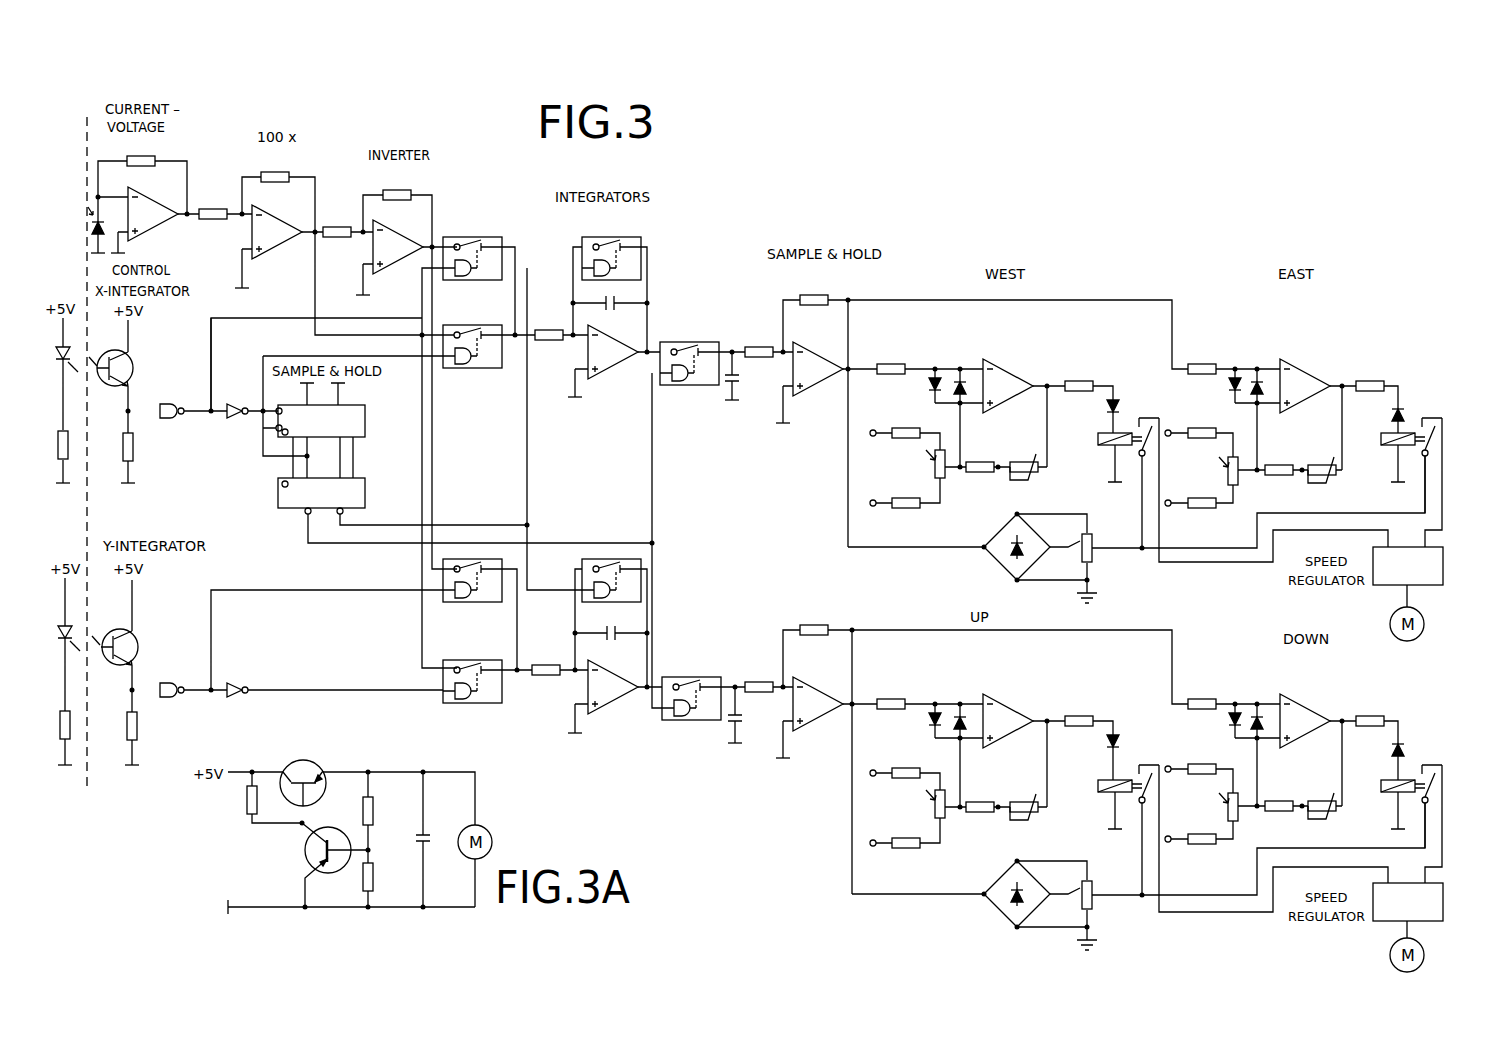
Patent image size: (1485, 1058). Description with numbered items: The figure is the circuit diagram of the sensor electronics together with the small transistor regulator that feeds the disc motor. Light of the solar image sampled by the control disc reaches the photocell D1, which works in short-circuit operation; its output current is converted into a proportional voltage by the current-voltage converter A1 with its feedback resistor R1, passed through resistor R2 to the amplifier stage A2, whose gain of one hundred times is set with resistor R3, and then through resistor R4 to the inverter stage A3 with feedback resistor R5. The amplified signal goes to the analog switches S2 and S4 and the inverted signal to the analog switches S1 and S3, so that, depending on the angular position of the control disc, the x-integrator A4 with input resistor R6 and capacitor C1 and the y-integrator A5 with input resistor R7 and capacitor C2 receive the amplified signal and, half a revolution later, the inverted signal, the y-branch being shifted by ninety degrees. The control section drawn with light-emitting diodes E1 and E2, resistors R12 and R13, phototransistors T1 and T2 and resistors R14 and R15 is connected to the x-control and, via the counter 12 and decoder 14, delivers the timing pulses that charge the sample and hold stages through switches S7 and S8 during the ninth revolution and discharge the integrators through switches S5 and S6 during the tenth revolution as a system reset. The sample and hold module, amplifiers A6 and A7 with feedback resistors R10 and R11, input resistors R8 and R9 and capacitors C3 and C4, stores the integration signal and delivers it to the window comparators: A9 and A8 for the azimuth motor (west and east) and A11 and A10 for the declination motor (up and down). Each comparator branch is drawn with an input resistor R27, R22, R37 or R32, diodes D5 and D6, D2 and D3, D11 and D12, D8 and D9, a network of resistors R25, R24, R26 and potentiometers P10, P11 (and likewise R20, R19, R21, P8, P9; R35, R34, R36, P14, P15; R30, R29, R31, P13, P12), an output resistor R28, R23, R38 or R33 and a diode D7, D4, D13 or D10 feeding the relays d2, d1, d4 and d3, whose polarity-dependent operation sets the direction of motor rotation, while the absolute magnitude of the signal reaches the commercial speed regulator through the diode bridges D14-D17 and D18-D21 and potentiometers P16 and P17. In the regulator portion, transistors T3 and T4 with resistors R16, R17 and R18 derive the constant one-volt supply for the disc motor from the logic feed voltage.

In FIG. 3, the feedback resistor of current-voltage converter R1 is at (141, 151).
In FIG. 3, the current-voltage converter A1 is at (153, 214).
In FIG. 3, the photocell D1 is at (107, 225).
In FIG. 3, the resistor R2 is at (213, 205).
In FIG. 3, the amplifier stage A2 is at (277, 232).
In FIG. 3, the feedback resistor R3 is at (275, 168).
In FIG. 3, the resistor R4 is at (337, 223).
In FIG. 3, the inverter stage A3 is at (398, 247).
In FIG. 3, the feedback resistor R5 is at (397, 186).
In FIG. 3, the light emitting diode E1 is at (71, 348).
In FIG. 3, the resistor R12 is at (74, 442).
In FIG. 3, the phototransistor T1 is at (125, 363).
In FIG. 3, the resistor R14 is at (146, 447).
In FIG. 3, the light emitting diode E2 is at (73, 626).
In FIG. 3, the resistor R13 is at (75, 722).
In FIG. 3, the phototransistor T2 is at (130, 645).
In FIG. 3, the resistor R15 is at (150, 726).
In FIG. 3, the counter 12 is at (363, 421).
In FIG. 3, the decoder 14 is at (363, 494).
In FIG. 3, the analog switch S1 is at (472, 249).
In FIG. 3, the analog switch S2 is at (472, 337).
In FIG. 3, the analog switch S3 is at (472, 595).
In FIG. 3, the analog switch S4 is at (472, 672).
In FIG. 3, the switch S5 is at (611, 249).
In FIG. 3, the switch S6 is at (603, 575).
In FIG. 3, the switch S7 is at (689, 351).
In FIG. 3, the switch S8 is at (691, 686).
In FIG. 3, the integrator resistor R6 is at (549, 325).
In FIG. 3, the integrator resistor R7 is at (546, 661).
In FIG. 3, the x-integrator A4 is at (613, 352).
In FIG. 3, the y-integrator A5 is at (613, 687).
In FIG. 3, the integrator capacitor C1 is at (622, 311).
In FIG. 3, the integrator capacitor C2 is at (621, 627).
In FIG. 3, the resistor R8 is at (759, 342).
In FIG. 3, the resistor R9 is at (759, 677).
In FIG. 3, the hold capacitor C3 is at (744, 379).
In FIG. 3, the hold capacitor C4 is at (746, 716).
In FIG. 3, the feedback resistor R10 is at (815, 290).
In FIG. 3, the feedback resistor R11 is at (818, 620).
In FIG. 3, the sample and hold module A6 is at (818, 369).
In FIG. 3, the sample and hold module A7 is at (818, 704).
In FIG. 3, the resistor R27 is at (890, 359).
In FIG. 3, the diode D5 is at (923, 389).
In FIG. 3, the diode D6 is at (959, 369).
In FIG. 3, the comparator stage A9 is at (1008, 386).
In FIG. 3, the resistor R28 is at (1080, 376).
In FIG. 3, the diode D7 is at (1124, 397).
In FIG. 3, the resistor R25 is at (895, 425).
In FIG. 3, the potentiometer P10 is at (925, 469).
In FIG. 3, the resistor R26 is at (978, 480).
In FIG. 3, the potentiometer P11 is at (1021, 462).
In FIG. 3, the resistor R24 is at (897, 517).
In FIG. 3, the relay d2 is at (1116, 450).
In FIG. 3, the diode bridge D14-D17 is at (989, 548).
In FIG. 3, the potentiometer P16 is at (1105, 545).
In FIG. 3, the resistor R22 is at (1202, 359).
In FIG. 3, the diode D2 is at (1222, 389).
In FIG. 3, the diode D3 is at (1256, 369).
In FIG. 3, the comparator stage A8 is at (1305, 386).
In FIG. 3, the resistor R23 is at (1372, 376).
In FIG. 3, the diode D4 is at (1409, 401).
In FIG. 3, the resistor R20 is at (1191, 425).
In FIG. 3, the potentiometer P8 is at (1221, 472).
In FIG. 3, the resistor R21 is at (1280, 459).
In FIG. 3, the potentiometer P9 is at (1326, 478).
In FIG. 3, the resistor R19 is at (1191, 517).
In FIG. 3, the relay d1 is at (1400, 450).
In FIG. 3, the resistor R37 is at (890, 694).
In FIG. 3, the diode D11 is at (923, 725).
In FIG. 3, the diode D12 is at (961, 704).
In FIG. 3, the comparator stage A11 is at (1008, 721).
In FIG. 3, the resistor R38 is at (1080, 711).
In FIG. 3, the diode D13 is at (1129, 732).
In FIG. 3, the resistor R35 is at (897, 764).
In FIG. 3, the potentiometer P14 is at (925, 809).
In FIG. 3, the resistor R36 is at (983, 797).
In FIG. 3, the potentiometer P15 is at (1032, 818).
In FIG. 3, the resistor R34 is at (897, 858).
In FIG. 3, the relay d4 is at (1113, 797).
In FIG. 3, the diode bridge D18-D21 is at (981, 894).
In FIG. 3, the potentiometer P17 is at (1103, 891).
In FIG. 3, the resistor R32 is at (1202, 694).
In FIG. 3, the diode D8 is at (1222, 725).
In FIG. 3, the diode D9 is at (1256, 704).
In FIG. 3, the comparator stage A10 is at (1305, 721).
In FIG. 3, the resistor R33 is at (1372, 711).
In FIG. 3, the diode D10 is at (1414, 737).
In FIG. 3, the resistor R30 is at (1191, 762).
In FIG. 3, the potentiometer P13 is at (1219, 810).
In FIG. 3, the resistor R31 is at (1280, 797).
In FIG. 3, the potentiometer P12 is at (1329, 817).
In FIG. 3, the resistor R29 is at (1191, 856).
In FIG. 3, the relay d3 is at (1400, 797).
In FIG. 3A, the transistor T3 is at (303, 774).
In FIG. 3A, the transistor T4 is at (317, 850).
In FIG. 3A, the resistor R16 is at (237, 801).
In FIG. 3A, the resistor R17 is at (386, 811).
In FIG. 3A, the resistor R18 is at (386, 877).